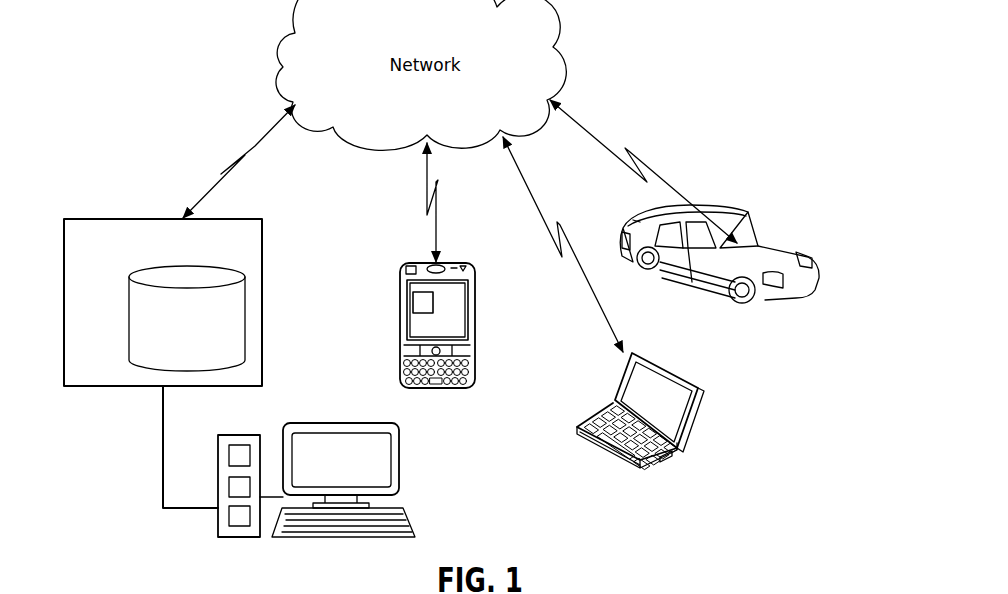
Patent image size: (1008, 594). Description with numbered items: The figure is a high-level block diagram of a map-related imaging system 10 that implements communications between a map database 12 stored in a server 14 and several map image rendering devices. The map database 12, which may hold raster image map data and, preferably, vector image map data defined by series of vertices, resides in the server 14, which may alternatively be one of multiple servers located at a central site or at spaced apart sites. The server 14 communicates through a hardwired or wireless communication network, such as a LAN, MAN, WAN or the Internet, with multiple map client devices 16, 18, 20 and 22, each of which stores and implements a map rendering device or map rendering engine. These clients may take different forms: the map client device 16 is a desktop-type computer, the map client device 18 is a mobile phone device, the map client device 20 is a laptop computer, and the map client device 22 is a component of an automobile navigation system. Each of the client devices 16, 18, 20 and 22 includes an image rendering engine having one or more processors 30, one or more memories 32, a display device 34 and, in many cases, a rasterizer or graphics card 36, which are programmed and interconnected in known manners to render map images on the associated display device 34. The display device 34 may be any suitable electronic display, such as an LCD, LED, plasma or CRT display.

The map-related imaging system 10 is at (214, 78).
The map database 12 is at (247, 313).
The server 14 is at (116, 218).
The map client device 16 is at (413, 454).
The map client device 18 is at (475, 259).
The map client device 20 is at (703, 428).
The map client device 22 is at (743, 243).
The processor 30 is at (229, 453).
The memory 32 is at (229, 485).
The display device 34 is at (444, 297).
The rasterizer or graphics card 36 is at (229, 524).